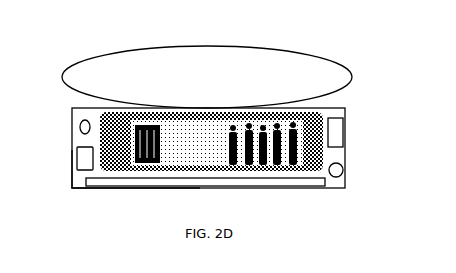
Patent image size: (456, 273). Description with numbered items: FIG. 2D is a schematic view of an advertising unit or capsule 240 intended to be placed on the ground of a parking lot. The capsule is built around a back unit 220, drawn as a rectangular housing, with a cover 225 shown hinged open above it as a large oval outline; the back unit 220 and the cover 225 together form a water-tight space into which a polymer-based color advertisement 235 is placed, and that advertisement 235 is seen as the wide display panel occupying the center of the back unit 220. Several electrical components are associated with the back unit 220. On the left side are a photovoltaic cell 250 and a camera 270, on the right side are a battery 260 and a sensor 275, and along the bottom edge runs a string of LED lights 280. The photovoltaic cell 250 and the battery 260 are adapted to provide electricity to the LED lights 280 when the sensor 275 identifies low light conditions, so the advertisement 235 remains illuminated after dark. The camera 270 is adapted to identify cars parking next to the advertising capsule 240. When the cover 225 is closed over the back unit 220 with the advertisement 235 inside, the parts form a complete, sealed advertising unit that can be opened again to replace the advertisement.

The cover 225 is at (70, 88).
The advertising unit or capsule 240 is at (65, 213).
The back unit 220 is at (73, 182).
The advertisement 235 is at (100, 113).
The photovoltaic cell 250 is at (73, 128).
The camera 270 is at (75, 158).
The string of LED lights 280 is at (203, 189).
The battery 260 is at (347, 133).
The sensor 275 is at (348, 171).